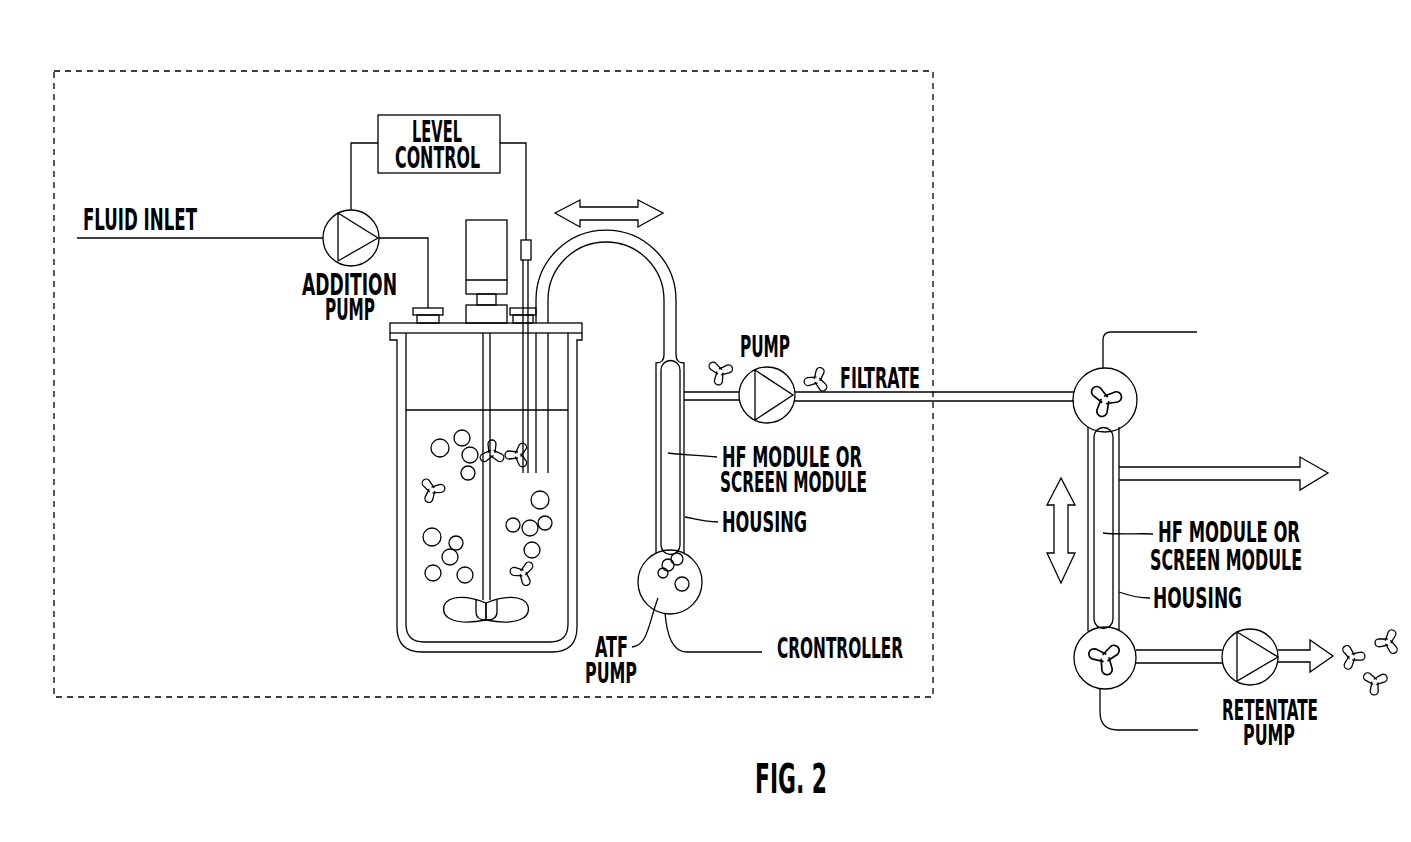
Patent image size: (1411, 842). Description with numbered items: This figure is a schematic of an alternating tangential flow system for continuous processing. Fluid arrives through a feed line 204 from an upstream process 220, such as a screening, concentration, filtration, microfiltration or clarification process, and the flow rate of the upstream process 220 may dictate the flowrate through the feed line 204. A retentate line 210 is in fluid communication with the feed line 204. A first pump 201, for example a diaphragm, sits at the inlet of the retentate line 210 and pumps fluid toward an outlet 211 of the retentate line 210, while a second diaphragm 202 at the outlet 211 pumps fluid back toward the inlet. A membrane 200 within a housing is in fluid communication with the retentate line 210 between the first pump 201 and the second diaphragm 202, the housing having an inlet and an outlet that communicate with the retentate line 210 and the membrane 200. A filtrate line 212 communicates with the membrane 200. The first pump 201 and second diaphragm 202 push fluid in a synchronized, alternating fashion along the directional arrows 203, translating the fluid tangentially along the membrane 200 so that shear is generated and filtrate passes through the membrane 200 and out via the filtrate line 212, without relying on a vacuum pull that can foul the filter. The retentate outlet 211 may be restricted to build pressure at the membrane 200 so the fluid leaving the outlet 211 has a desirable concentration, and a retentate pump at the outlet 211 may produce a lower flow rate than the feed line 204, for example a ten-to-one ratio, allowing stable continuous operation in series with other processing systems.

The upstream process 220 is at (582, 71).
The feed line 204 is at (993, 390).
The first pump 201 is at (1117, 368).
The membrane 200 is at (1103, 445).
The retentate line 210 is at (1103, 483).
The filtrate line 212 is at (1177, 480).
The directional arrows 203 is at (1053, 538).
The second diaphragm 202 is at (1137, 643).
The retentate outlet 211 is at (1140, 663).